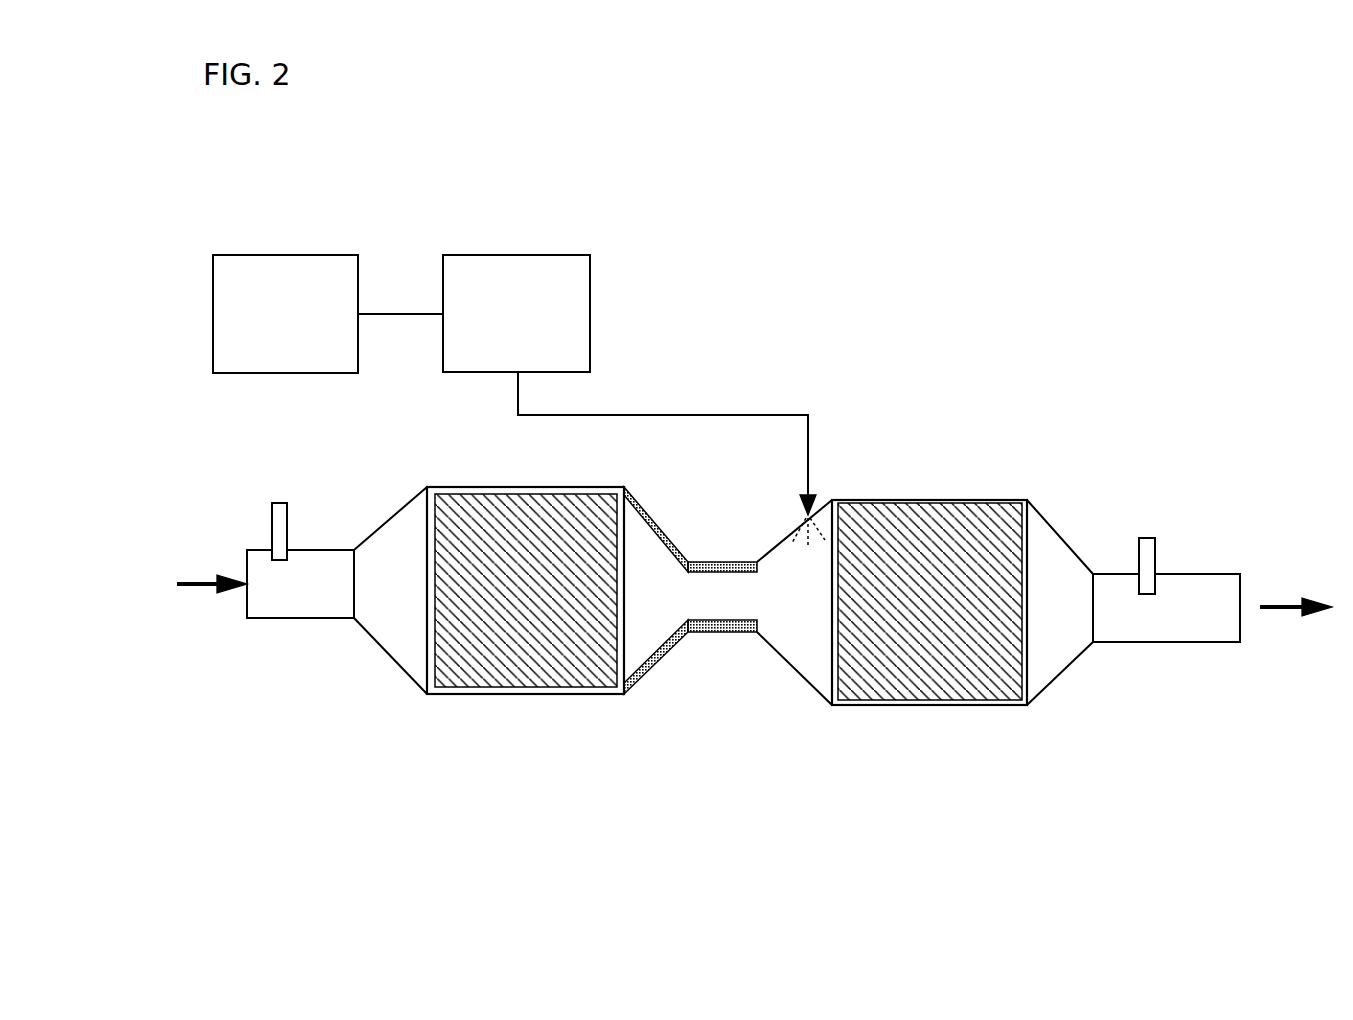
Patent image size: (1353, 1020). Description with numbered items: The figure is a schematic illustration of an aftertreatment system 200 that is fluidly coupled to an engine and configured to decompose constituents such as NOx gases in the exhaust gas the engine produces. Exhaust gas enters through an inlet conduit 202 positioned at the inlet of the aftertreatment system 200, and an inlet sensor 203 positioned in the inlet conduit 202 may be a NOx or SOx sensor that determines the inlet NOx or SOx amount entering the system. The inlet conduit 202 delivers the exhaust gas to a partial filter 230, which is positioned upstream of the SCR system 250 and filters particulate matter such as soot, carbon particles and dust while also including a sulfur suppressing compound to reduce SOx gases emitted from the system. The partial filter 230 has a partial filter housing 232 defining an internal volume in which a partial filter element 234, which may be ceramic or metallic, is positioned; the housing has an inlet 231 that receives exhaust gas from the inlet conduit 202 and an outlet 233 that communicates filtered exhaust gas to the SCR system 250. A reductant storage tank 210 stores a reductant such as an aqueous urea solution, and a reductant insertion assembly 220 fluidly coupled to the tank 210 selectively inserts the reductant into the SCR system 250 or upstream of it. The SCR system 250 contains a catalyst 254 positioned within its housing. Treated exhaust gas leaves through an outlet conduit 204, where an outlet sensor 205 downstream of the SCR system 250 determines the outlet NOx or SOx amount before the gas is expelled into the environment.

The aftertreatment system 200 is at (938, 254).
The inlet conduit 202 is at (313, 604).
The inlet sensor 203 is at (283, 512).
The outlet conduit 204 is at (1205, 633).
The outlet sensor 205 is at (1148, 547).
The reductant storage tank 210 is at (285, 314).
The reductant insertion assembly 220 is at (516, 313).
The partial filter 230 is at (558, 697).
The inlet 231 is at (388, 643).
The partial filter housing 232 is at (475, 678).
The outlet 233 is at (657, 630).
The partial filter element 234 is at (678, 633).
The SCR system 250 is at (875, 707).
The catalyst 254 is at (960, 697).